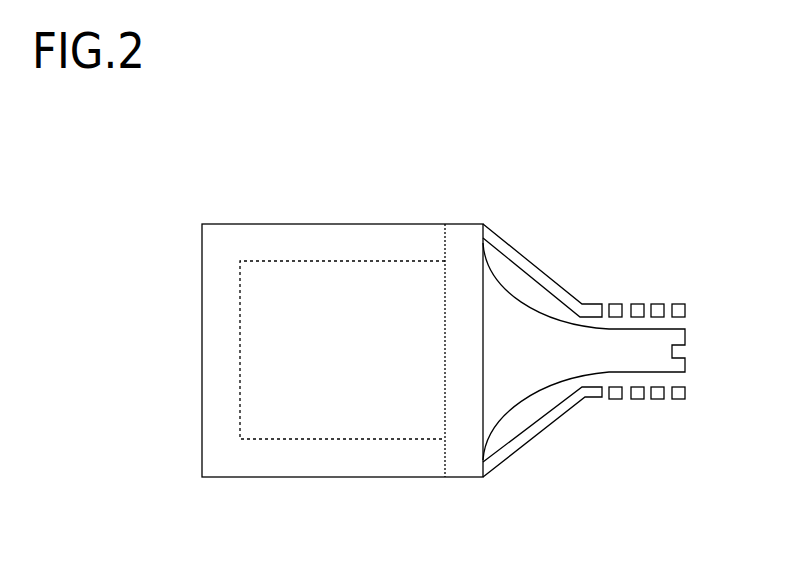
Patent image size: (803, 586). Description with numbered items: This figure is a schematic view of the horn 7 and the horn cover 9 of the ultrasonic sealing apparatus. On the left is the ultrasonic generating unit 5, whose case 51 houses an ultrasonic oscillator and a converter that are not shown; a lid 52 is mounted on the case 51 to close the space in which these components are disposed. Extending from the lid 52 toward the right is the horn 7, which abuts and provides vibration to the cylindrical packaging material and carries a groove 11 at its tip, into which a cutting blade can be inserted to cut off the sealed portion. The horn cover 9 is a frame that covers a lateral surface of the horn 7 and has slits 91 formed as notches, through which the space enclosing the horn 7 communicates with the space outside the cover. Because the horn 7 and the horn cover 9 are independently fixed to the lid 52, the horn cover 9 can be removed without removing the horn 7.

The ultrasonic generating unit 5 is at (233, 467).
The case 51 is at (332, 440).
The lid 52 is at (463, 467).
The horn cover 9 is at (529, 256).
The horn 7 is at (556, 383).
The groove 11 is at (673, 348).
The slits 91 is at (630, 304).